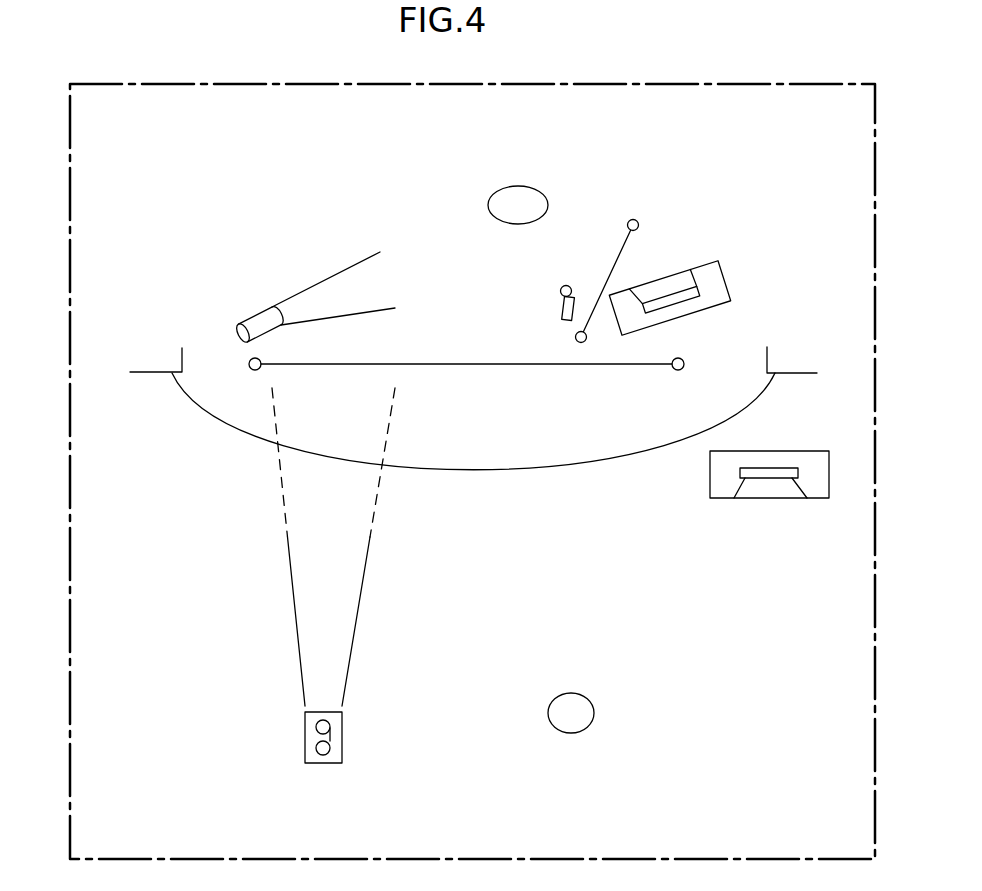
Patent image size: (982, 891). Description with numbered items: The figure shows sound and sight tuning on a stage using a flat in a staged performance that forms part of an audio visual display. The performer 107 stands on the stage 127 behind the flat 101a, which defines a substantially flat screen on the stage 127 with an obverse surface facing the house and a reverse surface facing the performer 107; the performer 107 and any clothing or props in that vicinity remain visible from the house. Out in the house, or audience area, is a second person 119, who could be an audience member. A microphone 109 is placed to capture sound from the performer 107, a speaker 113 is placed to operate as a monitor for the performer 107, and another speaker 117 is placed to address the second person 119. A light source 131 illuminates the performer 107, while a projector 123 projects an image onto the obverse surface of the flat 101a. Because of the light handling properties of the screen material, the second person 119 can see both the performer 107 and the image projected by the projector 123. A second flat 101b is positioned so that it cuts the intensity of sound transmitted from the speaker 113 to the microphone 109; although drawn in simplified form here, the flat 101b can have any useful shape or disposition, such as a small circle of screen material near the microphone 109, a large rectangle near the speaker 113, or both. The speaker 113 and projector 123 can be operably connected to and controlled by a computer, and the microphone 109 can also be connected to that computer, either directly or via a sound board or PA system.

The flat 101a is at (657, 362).
The flat 101b is at (638, 222).
The performer 107 is at (519, 196).
The microphone 109 is at (567, 286).
The speaker 113 is at (717, 260).
The speaker 117 is at (757, 488).
The second person 119 is at (565, 720).
The projector 123 is at (305, 732).
The stage 127 is at (258, 446).
The light source 131 is at (248, 319).